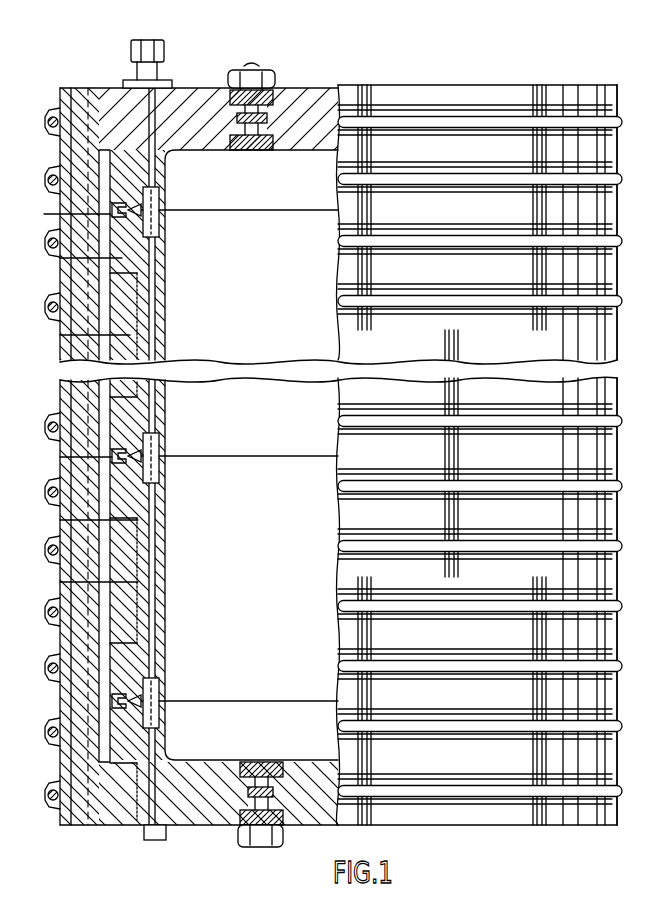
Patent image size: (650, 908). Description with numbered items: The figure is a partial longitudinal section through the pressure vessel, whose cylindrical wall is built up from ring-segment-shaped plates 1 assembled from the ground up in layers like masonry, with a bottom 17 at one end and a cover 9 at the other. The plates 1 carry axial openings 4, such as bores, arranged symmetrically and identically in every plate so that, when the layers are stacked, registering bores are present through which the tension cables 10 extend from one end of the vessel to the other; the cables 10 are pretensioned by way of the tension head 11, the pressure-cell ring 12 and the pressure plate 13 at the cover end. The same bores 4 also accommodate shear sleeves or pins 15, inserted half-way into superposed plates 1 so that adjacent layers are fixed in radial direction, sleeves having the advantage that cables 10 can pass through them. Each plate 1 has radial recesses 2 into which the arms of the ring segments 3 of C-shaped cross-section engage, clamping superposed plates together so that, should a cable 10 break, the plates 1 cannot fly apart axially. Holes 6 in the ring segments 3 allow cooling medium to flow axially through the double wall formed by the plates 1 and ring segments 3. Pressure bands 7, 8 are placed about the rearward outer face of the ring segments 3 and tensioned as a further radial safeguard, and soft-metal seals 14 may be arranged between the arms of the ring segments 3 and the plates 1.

The ring-segment-shaped plate 1 is at (60, 266).
The radial recess 2 is at (122, 275).
The ring segment 3 is at (62, 205).
The opening 4 is at (163, 298).
The hole 6 is at (184, 457).
The pressure band 7 is at (54, 686).
The pressure band 8 is at (54, 733).
The cover 9 is at (217, 97).
The tension cable 10 is at (152, 598).
The tension head 11 is at (162, 44).
The pressure-cell ring 12 is at (165, 86).
The pressure plate 13 is at (124, 82).
The soft-metal seal 14 is at (137, 800).
The shear sleeve or pin 15 is at (160, 447).
The bottom 17 is at (198, 820).